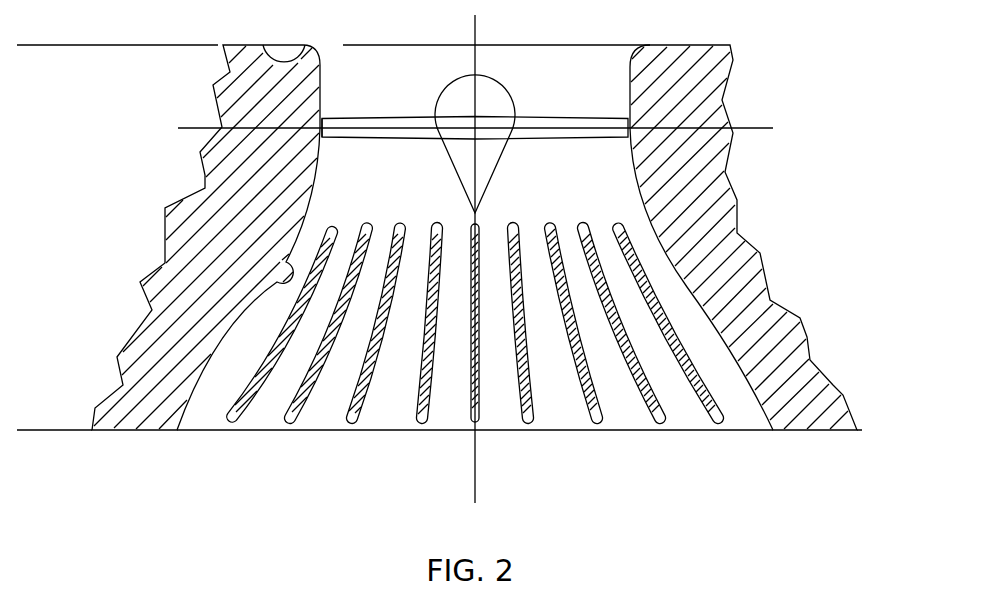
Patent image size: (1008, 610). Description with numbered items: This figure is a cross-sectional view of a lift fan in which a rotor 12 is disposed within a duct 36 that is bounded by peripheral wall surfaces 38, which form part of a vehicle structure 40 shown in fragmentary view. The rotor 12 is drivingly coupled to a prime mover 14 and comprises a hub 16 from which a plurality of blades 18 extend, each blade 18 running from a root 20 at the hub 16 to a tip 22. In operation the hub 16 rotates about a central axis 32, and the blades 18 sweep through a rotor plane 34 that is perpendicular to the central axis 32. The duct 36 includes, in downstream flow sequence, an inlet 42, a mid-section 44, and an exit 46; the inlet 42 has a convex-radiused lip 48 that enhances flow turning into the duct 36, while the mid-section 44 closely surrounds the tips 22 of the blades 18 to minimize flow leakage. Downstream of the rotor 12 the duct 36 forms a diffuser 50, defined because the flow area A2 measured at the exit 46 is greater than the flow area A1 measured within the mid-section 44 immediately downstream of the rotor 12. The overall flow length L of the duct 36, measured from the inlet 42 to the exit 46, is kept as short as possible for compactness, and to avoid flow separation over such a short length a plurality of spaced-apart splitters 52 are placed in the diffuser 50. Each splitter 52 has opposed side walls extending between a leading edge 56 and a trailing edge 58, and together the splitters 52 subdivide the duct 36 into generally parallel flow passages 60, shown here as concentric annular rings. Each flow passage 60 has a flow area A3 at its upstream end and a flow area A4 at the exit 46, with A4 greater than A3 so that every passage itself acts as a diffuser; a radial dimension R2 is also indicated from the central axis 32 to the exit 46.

The rotor 12 is at (572, 67).
The prime mover 14 is at (465, 85).
The hub 16 is at (500, 120).
The blades 18 is at (582, 118).
The root 20 is at (435, 128).
The tip 22 is at (322, 128).
The central axis 32 is at (477, 24).
The rotor plane 34 is at (757, 127).
The duct 36 is at (293, 240).
The peripheral wall surfaces 38 is at (283, 270).
The vehicle structure 40 is at (705, 55).
The inlet 42 is at (343, 45).
The mid-section 44 is at (315, 190).
The exit 46 is at (187, 430).
The convex-radiused lip 48 is at (264, 46).
The diffuser 50 is at (705, 307).
The splitters 52 is at (527, 328).
The leading edge 56 is at (582, 226).
The trailing edge 58 is at (661, 421).
The flow passages 60 is at (622, 390).
The overall flow length L is at (52, 45).
The flow area at the rotor A1 is at (630, 163).
The flow area at the exit A2 is at (91, 438).
The flow passage upstream flow area A3 is at (440, 228).
The flow passage exit flow area A4 is at (352, 432).
The outlet radius R2 is at (475, 487).